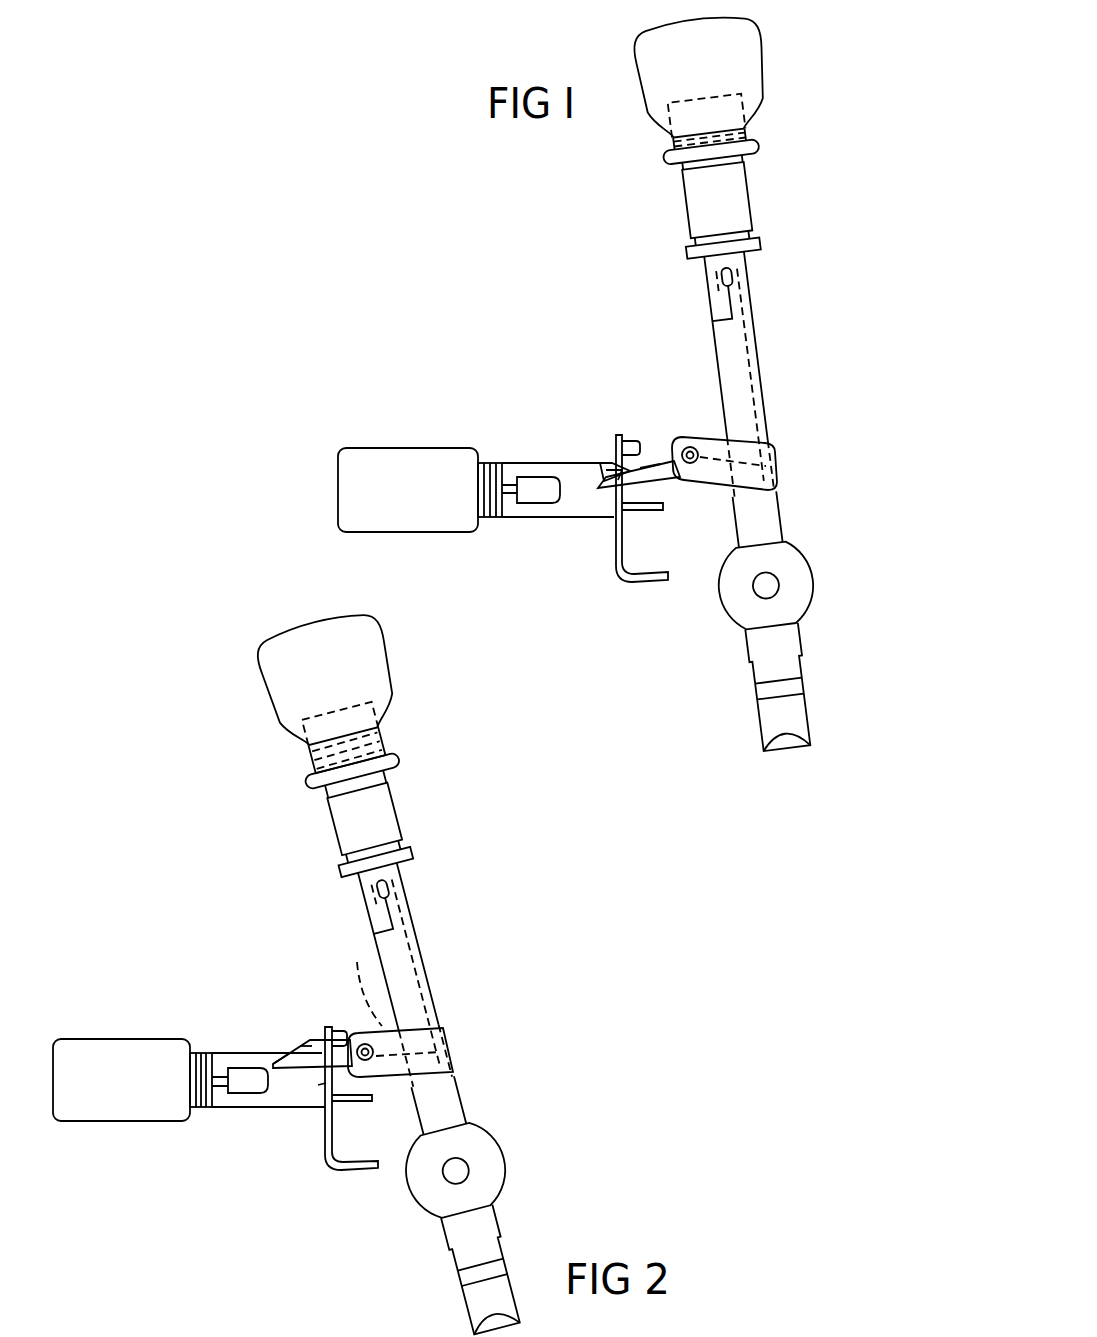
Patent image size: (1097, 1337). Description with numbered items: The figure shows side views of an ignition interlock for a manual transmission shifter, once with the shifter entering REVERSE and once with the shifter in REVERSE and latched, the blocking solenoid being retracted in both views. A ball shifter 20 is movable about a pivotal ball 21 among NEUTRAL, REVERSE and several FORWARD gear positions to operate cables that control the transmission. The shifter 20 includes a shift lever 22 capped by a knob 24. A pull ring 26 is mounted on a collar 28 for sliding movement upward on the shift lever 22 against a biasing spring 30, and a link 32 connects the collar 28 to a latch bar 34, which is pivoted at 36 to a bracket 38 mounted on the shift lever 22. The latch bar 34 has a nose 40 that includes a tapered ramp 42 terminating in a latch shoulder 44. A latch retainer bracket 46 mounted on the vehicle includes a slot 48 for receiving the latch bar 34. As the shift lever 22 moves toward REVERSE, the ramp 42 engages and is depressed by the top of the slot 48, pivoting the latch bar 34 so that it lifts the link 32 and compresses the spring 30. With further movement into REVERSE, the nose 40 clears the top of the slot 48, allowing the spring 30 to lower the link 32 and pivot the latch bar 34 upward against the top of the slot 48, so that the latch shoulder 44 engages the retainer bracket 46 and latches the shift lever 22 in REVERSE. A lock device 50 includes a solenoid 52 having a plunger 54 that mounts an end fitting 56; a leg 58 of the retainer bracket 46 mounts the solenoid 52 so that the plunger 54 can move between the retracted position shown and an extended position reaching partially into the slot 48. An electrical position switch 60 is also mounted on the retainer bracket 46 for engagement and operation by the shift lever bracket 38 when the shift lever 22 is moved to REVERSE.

In FIG. 1, the ball shifter 20 is at (760, 340).
In FIG. 2, the ball shifter 20 is at (455, 953).
In FIG. 1, the pivotal ball 21 is at (716, 594).
In FIG. 2, the pivotal ball 21 is at (505, 1186).
In FIG. 1, the shift lever 22 is at (778, 527).
In FIG. 2, the shift lever 22 is at (432, 992).
In FIG. 1, the knob 24 is at (761, 34).
In FIG. 2, the knob 24 is at (391, 631).
In FIG. 1, the pull ring 26 is at (662, 153).
In FIG. 2, the pull ring 26 is at (397, 764).
In FIG. 1, the collar 28 is at (690, 205).
In FIG. 2, the collar 28 is at (401, 816).
In FIG. 1, the biasing spring 30 is at (748, 128).
In FIG. 2, the biasing spring 30 is at (384, 721).
In FIG. 1, the link 32 is at (709, 302).
In FIG. 2, the link 32 is at (404, 921).
In FIG. 1, the latch bar 34 is at (638, 479).
In FIG. 2, the latch bar 34 is at (327, 997).
In FIG. 1, the pivot 36 is at (693, 464).
In FIG. 2, the pivot 36 is at (368, 1060).
In FIG. 1, the bracket 38 is at (778, 456).
In FIG. 2, the bracket 38 is at (455, 1052).
In FIG. 1, the nose 40 is at (600, 466).
In FIG. 2, the nose 40 is at (282, 1060).
In FIG. 1, the tapered ramp 42 is at (613, 468).
In FIG. 2, the tapered ramp 42 is at (306, 1040).
In FIG. 1, the latch shoulder 44 is at (655, 456).
In FIG. 2, the latch shoulder 44 is at (322, 1085).
In FIG. 1, the latch retainer bracket 46 is at (616, 581).
In FIG. 2, the latch retainer bracket 46 is at (350, 1170).
In FIG. 1, the slot 48 is at (615, 507).
In FIG. 2, the slot 48 is at (328, 1102).
In FIG. 1, the lock device 50 is at (386, 440).
In FIG. 2, the lock device 50 is at (100, 1030).
In FIG. 1, the solenoid 52 is at (344, 521).
In FIG. 2, the solenoid 52 is at (116, 1118).
In FIG. 1, the plunger 54 is at (495, 520).
In FIG. 2, the plunger 54 is at (212, 1108).
In FIG. 1, the end fitting 56 is at (540, 493).
In FIG. 2, the end fitting 56 is at (248, 1095).
In FIG. 1, the leg 58 is at (518, 462).
In FIG. 2, the leg 58 is at (228, 1053).
In FIG. 1, the electrical position switch 60 is at (630, 443).
In FIG. 2, the electrical position switch 60 is at (332, 1038).